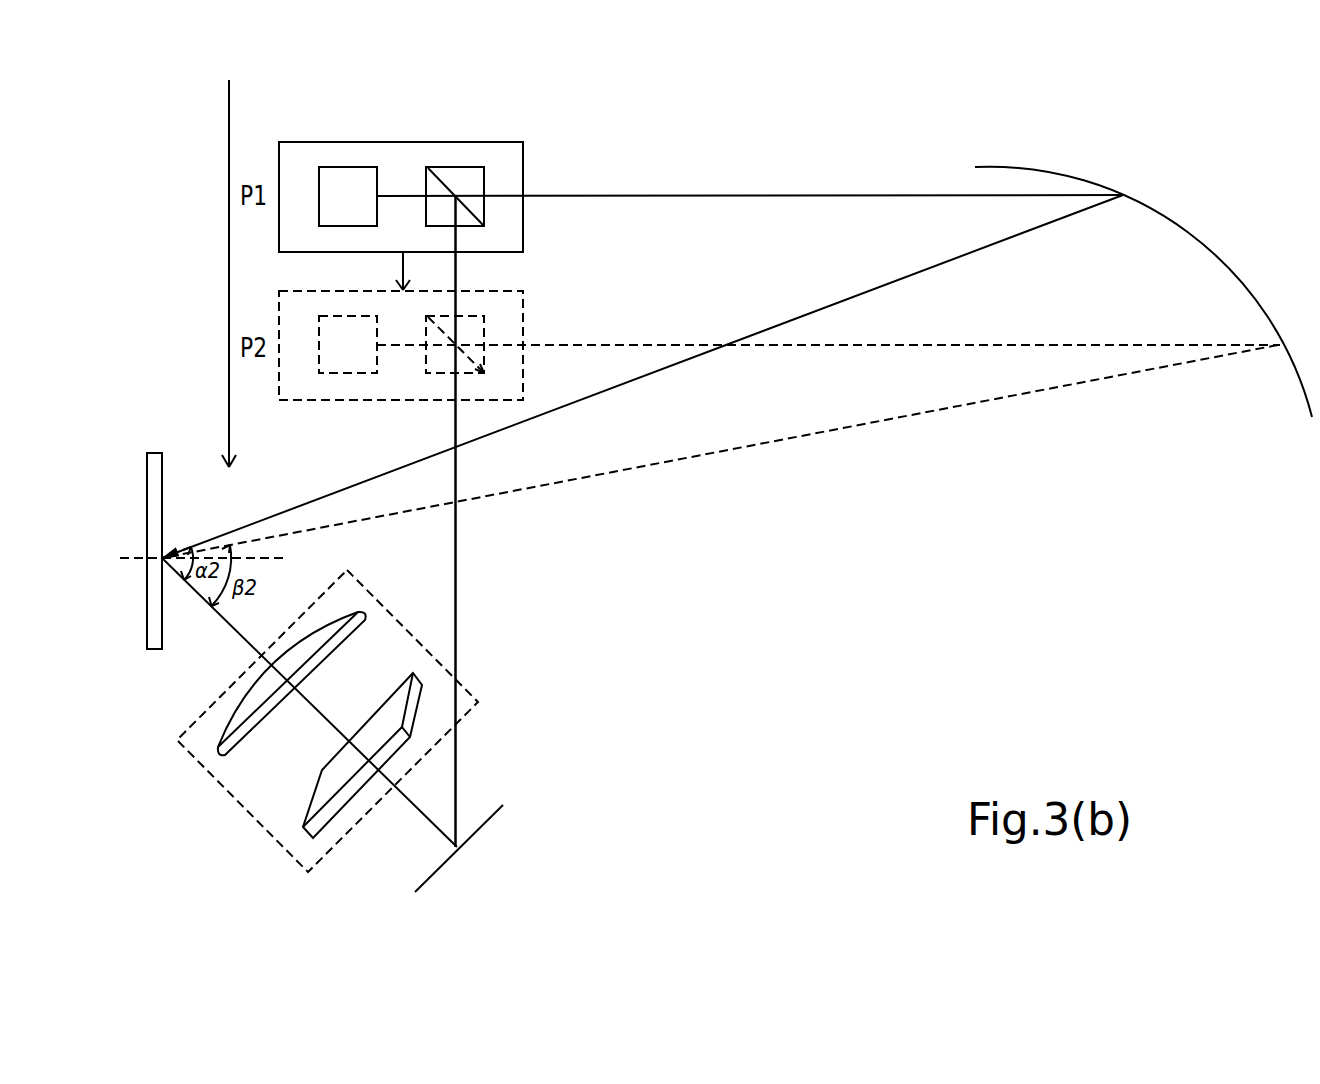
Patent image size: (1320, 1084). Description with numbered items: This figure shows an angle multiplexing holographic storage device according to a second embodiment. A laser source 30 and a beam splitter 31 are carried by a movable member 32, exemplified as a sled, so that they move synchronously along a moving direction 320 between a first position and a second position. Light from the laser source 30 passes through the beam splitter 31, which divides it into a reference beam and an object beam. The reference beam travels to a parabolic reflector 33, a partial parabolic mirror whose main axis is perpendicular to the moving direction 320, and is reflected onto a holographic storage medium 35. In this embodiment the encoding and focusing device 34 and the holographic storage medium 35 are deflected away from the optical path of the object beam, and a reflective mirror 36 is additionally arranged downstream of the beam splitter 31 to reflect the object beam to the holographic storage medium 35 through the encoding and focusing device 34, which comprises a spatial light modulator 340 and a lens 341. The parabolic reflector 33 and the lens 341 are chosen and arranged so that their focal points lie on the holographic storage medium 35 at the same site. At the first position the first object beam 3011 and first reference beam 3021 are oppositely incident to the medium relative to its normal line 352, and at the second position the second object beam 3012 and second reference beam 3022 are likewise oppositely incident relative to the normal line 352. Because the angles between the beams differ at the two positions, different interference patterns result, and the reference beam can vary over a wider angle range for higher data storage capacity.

The laser source 30 is at (346, 187).
The beam splitter 31 is at (453, 187).
The movable member 32 is at (505, 190).
The moving direction 320 is at (227, 265).
The first object beam 3011 is at (456, 265).
The second object beam 3012 is at (558, 521).
The first reference beam 3021 is at (733, 196).
The second reference beam 3022 is at (962, 345).
The parabolic reflector 33 is at (1220, 261).
The holographic storage medium 35 is at (148, 523).
The normal line 352 is at (273, 559).
The encoding and focusing device 34 is at (215, 727).
The lens 341 is at (363, 620).
The spatial light modulator 340 is at (310, 800).
The reflective mirror 36 is at (487, 823).